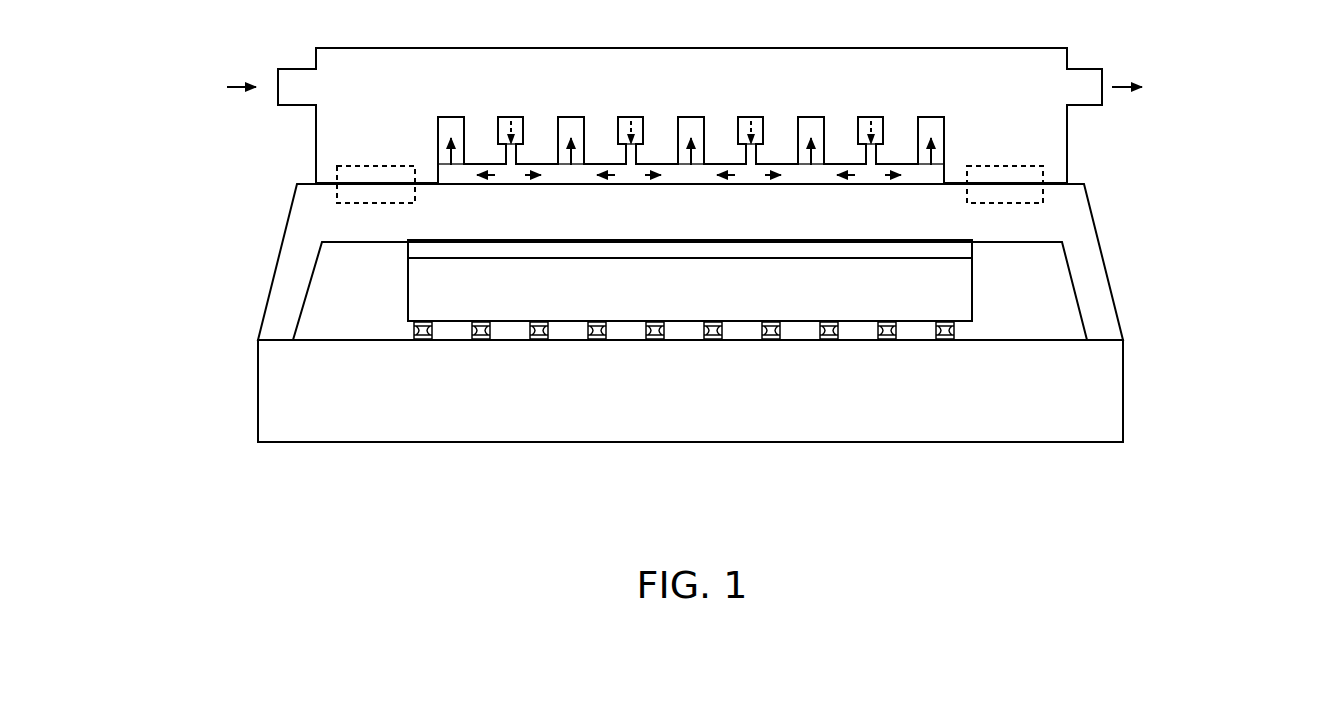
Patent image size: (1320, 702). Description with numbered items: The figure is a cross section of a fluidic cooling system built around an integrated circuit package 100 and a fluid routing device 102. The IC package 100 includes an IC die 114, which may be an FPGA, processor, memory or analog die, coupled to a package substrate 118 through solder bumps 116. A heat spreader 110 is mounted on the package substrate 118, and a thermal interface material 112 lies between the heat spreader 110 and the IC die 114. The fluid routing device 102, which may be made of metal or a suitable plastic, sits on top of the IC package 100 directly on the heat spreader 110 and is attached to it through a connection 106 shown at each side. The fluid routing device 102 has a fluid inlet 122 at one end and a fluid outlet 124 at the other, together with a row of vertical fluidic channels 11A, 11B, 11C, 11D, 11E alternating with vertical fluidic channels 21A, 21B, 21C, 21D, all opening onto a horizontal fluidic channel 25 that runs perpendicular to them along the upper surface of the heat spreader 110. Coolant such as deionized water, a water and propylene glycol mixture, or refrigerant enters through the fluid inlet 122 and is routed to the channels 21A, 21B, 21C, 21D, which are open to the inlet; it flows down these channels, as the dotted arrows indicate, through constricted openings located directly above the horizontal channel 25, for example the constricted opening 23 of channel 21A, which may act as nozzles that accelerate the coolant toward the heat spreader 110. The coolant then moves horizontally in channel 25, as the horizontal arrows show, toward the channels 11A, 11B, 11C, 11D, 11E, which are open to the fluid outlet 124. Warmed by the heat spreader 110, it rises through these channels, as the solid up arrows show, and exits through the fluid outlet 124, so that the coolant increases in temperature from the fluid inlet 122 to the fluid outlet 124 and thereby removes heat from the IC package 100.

The integrated circuit package 100 is at (204, 238).
The fluid routing device 102 is at (913, 48).
The connection 106 is at (365, 166).
The heat spreader 110 is at (289, 215).
The thermal interface material 112 is at (407, 250).
The IC die 114 is at (972, 285).
The solder bumps 116 is at (403, 330).
The package substrate 118 is at (1027, 442).
The fluid inlet 122 is at (297, 69).
The fluid outlet 124 is at (1087, 69).
The vertical fluidic channel 11A is at (451, 117).
The vertical fluidic channel 11B is at (571, 117).
The vertical fluidic channel 11C is at (691, 117).
The vertical fluidic channel 11D is at (811, 117).
The vertical fluidic channel 11E is at (931, 117).
The vertical fluidic channel 21A is at (512, 117).
The vertical fluidic channel 21B is at (632, 117).
The vertical fluidic channel 21C is at (752, 117).
The vertical fluidic channel 21D is at (872, 117).
The constricted opening 23 is at (508, 158).
The horizontal fluidic channel 25 is at (810, 178).